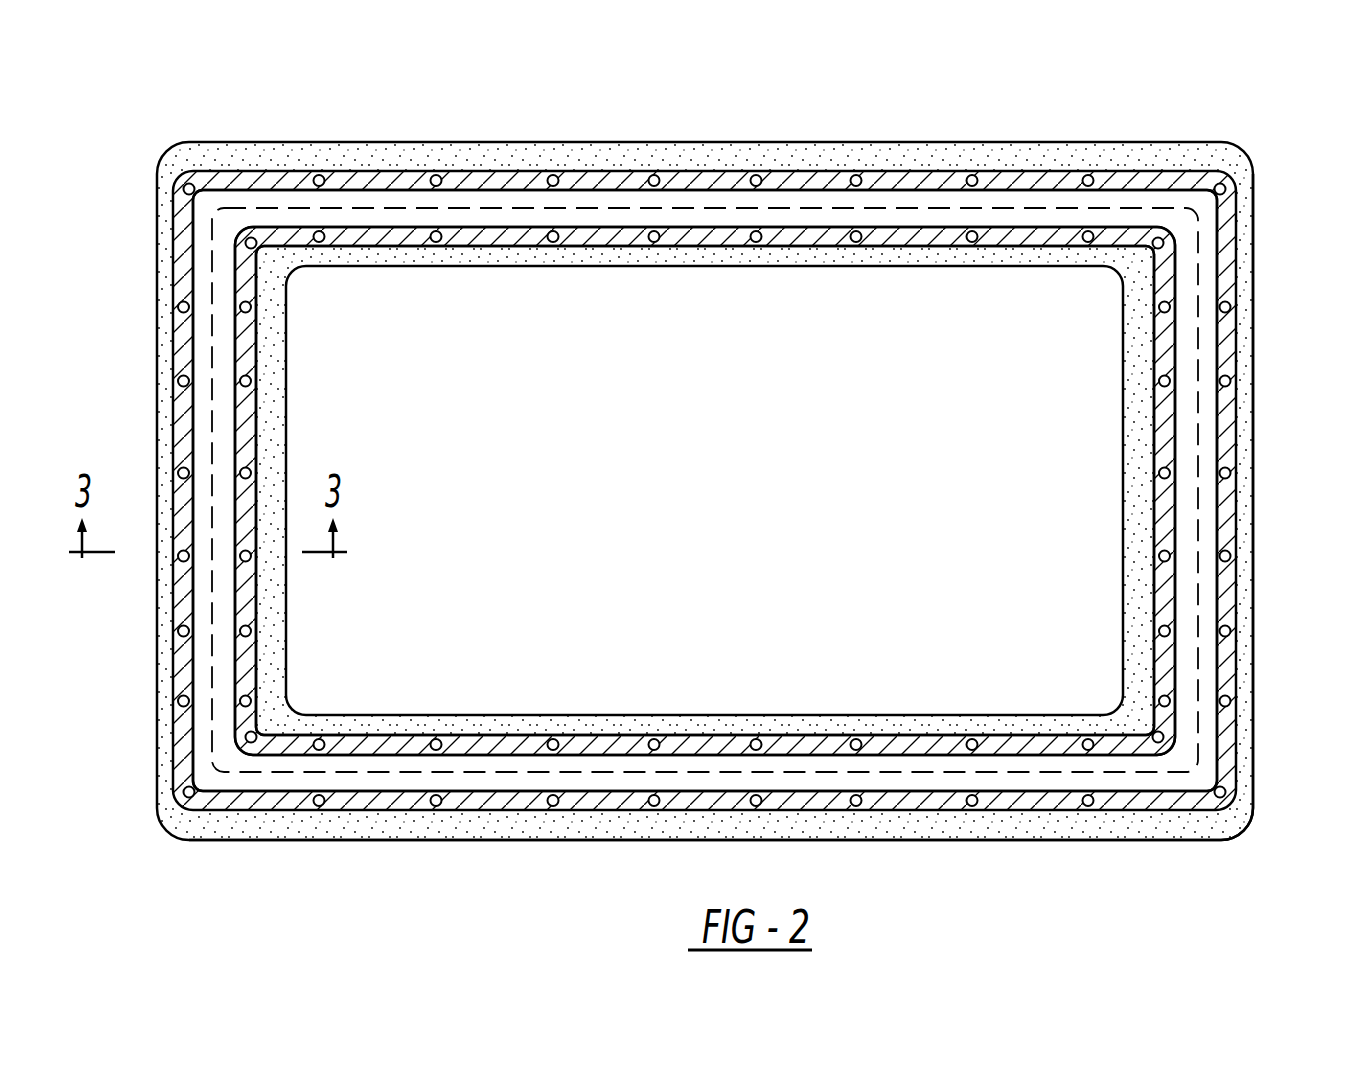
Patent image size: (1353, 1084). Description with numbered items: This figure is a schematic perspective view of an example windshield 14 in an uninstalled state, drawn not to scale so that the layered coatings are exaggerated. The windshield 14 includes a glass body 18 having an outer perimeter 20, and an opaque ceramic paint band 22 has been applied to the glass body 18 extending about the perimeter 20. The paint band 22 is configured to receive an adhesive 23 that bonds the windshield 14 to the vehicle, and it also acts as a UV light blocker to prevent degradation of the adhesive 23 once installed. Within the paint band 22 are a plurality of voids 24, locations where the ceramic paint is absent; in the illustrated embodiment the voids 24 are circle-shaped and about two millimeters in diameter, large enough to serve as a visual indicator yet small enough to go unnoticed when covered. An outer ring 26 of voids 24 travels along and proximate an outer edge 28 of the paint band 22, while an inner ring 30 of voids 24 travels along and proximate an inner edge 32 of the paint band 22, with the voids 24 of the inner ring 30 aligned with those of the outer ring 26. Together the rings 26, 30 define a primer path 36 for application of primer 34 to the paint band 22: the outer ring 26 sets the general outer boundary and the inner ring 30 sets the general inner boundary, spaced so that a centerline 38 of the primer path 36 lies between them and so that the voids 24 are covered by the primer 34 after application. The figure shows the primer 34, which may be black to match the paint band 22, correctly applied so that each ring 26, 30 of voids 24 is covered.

The windshield 14 is at (1093, 85).
The glass body 18 is at (705, 468).
The outer perimeter 20 is at (721, 853).
The paint band 22 is at (202, 825).
The adhesive 23 is at (380, 780).
The voids 24 is at (441, 179).
The outer ring 26 is at (1227, 730).
The outer edge 28 is at (1212, 535).
The inner ring 30 is at (1163, 678).
The inner edge 32 is at (888, 723).
The primer 34 is at (267, 743).
The primer path 36 is at (803, 191).
The centerline 38 is at (588, 208).